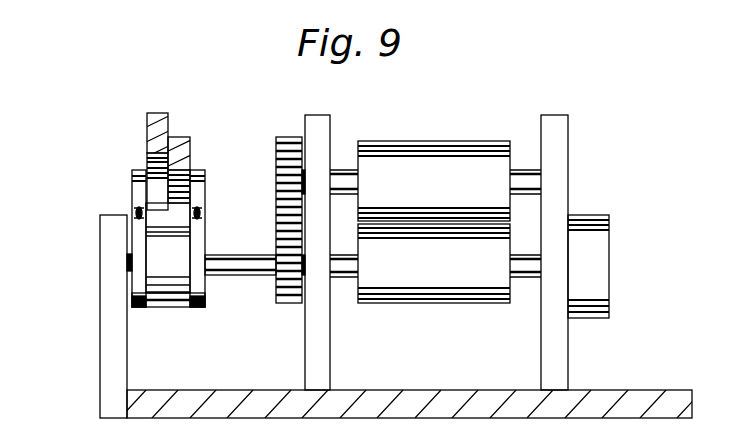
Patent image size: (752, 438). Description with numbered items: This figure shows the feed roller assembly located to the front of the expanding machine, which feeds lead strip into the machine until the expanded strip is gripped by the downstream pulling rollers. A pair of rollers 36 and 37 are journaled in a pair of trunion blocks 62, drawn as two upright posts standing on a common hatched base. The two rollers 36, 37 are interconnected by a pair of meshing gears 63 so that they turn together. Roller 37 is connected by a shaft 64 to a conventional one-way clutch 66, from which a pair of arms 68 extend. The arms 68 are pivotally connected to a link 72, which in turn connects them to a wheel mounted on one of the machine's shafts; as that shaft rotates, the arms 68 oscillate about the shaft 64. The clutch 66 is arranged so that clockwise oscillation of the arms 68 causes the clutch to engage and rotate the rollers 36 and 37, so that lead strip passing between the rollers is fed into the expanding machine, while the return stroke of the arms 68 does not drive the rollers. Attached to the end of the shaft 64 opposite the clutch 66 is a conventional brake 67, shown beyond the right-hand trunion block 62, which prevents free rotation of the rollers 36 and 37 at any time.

The link 72 is at (157, 140).
The arms 68 is at (200, 186).
The one-way clutch 66 is at (180, 308).
The shaft 64 is at (249, 270).
The meshing gears 63 is at (286, 137).
The trunion blocks 62 is at (322, 118).
The roller 36 is at (452, 158).
The roller 37 is at (451, 288).
The brake 67 is at (600, 250).